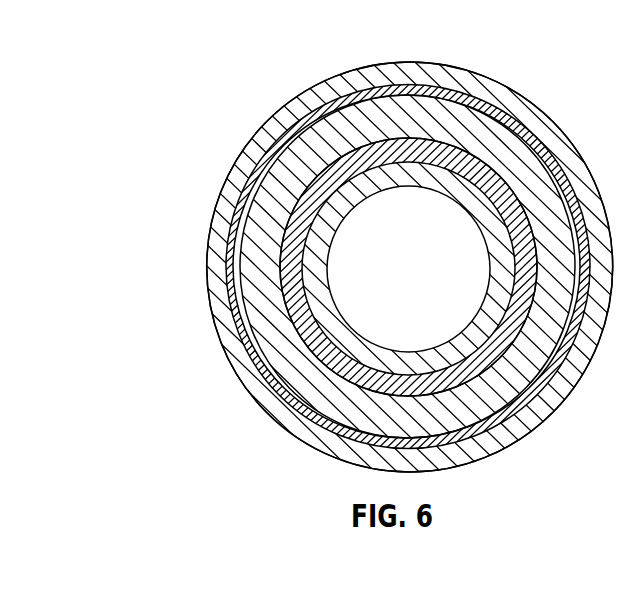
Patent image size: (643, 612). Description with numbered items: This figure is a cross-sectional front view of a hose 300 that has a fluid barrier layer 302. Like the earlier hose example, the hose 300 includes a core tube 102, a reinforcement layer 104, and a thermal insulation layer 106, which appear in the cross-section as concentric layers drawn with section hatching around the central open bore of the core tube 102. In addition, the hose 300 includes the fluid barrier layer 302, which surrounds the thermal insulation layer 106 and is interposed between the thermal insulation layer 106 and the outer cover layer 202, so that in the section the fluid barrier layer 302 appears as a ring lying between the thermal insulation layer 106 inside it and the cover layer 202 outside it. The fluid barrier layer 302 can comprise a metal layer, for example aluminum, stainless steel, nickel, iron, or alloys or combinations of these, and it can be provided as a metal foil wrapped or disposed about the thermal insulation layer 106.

The hose 300 is at (242, 120).
The cover layer 202 is at (322, 90).
The thermal insulation layer 106 is at (480, 122).
The fluid barrier layer 302 is at (425, 100).
The reinforcement layer 104 is at (522, 245).
The core tube 102 is at (385, 168).